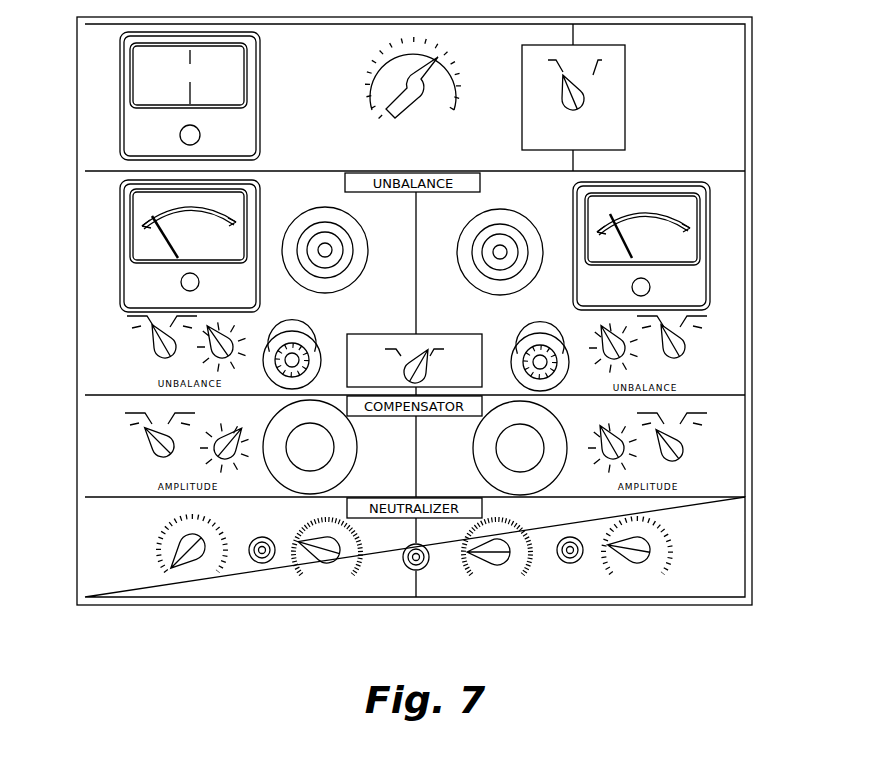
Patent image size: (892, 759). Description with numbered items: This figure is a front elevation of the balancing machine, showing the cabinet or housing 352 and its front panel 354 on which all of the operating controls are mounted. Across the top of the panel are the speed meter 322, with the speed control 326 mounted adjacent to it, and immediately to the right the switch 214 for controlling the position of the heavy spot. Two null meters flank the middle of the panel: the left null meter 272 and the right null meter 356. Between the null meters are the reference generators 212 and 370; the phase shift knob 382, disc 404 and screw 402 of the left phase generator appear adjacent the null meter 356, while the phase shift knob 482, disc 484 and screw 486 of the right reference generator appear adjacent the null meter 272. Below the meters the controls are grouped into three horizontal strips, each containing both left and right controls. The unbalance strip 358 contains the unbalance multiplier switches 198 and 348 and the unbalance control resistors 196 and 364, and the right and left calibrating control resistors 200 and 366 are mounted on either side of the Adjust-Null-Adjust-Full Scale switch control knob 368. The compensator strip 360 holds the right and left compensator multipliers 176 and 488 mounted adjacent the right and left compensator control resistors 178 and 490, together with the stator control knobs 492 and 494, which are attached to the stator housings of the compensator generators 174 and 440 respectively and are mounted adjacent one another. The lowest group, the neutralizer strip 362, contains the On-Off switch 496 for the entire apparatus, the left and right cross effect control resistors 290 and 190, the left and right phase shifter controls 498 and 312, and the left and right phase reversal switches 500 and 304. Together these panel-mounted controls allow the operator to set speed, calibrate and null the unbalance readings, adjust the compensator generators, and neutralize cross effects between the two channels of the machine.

The speed meter 322 is at (252, 36).
The speed control 326 is at (440, 57).
The heavy spot switch 214 is at (584, 96).
The left null meter 272 is at (692, 182).
The cabinet 352 is at (756, 213).
The front panel 354 is at (733, 443).
The right null meter 356 is at (128, 222).
The unbalance strip 358 is at (74, 326).
The compensator strip 360 is at (76, 440).
The neutralizer strip 362 is at (76, 538).
The reference generator 370 is at (370, 262).
The phase shift knob 382 is at (350, 240).
The disc 404 is at (318, 239).
The screw 402 is at (325, 243).
The reference generator 212 is at (548, 265).
The phase shift knob 482 is at (518, 232).
The disc 484 is at (495, 267).
The screw 486 is at (497, 250).
The unbalance multiplier switch 348 is at (154, 346).
The unbalance control resistor 364 is at (232, 336).
The calibrating control resistor 366 is at (314, 346).
The Adjust-Null-Adjust-Full Scale switch control knob 368 is at (428, 348).
The calibrating control resistor 200 is at (514, 346).
The unbalance control resistor 196 is at (599, 338).
The unbalance multiplier switch 198 is at (686, 346).
The compensator multiplier 488 is at (152, 452).
The compensator control resistor 490 is at (233, 432).
The compensator generator 440 is at (362, 450).
The stator control knob 494 is at (344, 460).
The compensator generator 174 is at (462, 465).
The stator control knob 492 is at (489, 469).
The compensator control resistor 178 is at (608, 465).
The compensator multiplier 176 is at (680, 456).
The cross effect control resistor 290 is at (182, 536).
The phase reversal switch 500 is at (251, 541).
The phase shifter control 498 is at (319, 541).
The On-Off switch 496 is at (403, 565).
The phase shifter control 312 is at (496, 541).
The phase reversal switch 304 is at (573, 541).
The cross effect control resistor 190 is at (650, 543).